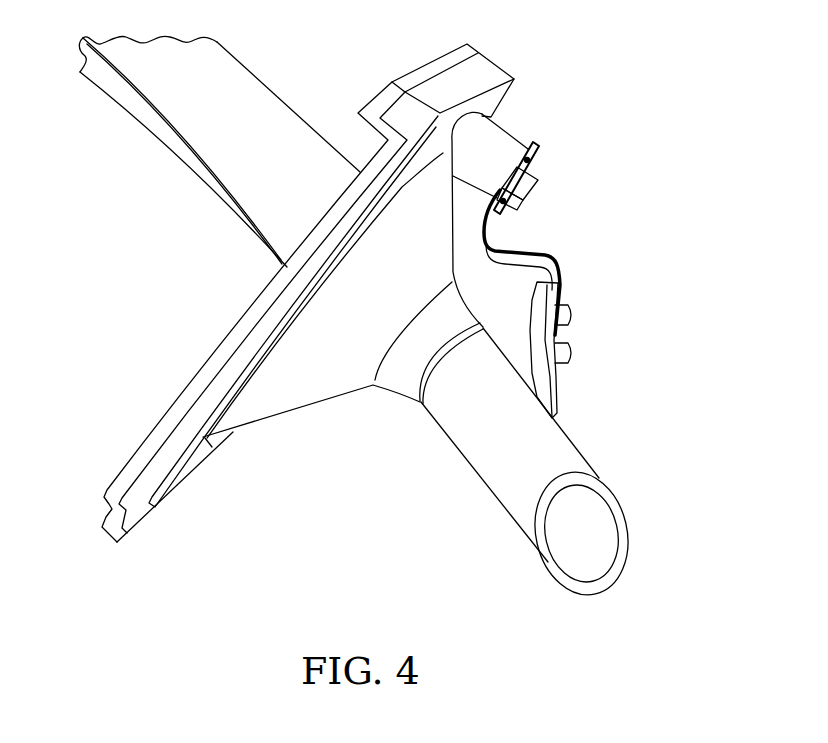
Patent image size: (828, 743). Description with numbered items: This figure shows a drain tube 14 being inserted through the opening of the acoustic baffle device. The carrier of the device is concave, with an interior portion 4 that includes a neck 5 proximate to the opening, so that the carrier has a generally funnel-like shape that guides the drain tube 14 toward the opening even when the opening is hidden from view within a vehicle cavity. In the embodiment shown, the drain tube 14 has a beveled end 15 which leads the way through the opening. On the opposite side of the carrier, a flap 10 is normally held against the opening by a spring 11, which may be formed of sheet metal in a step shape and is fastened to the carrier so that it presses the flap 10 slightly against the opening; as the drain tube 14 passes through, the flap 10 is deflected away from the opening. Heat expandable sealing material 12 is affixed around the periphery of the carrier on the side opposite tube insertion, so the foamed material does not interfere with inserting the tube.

The interior portion 4 is at (267, 400).
The neck 5 is at (393, 377).
The flap 10 is at (550, 380).
The spring 11 is at (558, 262).
The heat expandable sealing material 12 is at (481, 71).
The drain tube 14 is at (493, 475).
The beveled end 15 is at (617, 563).